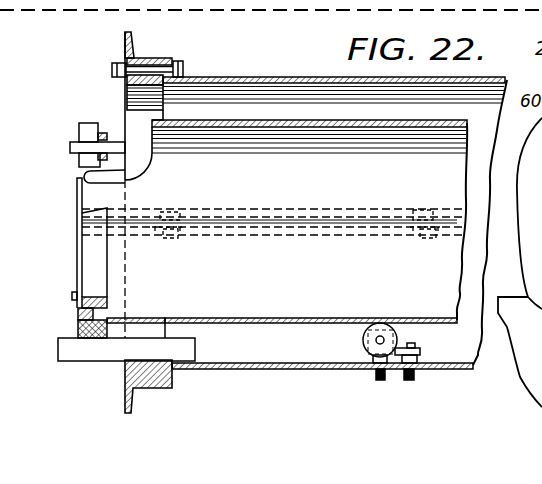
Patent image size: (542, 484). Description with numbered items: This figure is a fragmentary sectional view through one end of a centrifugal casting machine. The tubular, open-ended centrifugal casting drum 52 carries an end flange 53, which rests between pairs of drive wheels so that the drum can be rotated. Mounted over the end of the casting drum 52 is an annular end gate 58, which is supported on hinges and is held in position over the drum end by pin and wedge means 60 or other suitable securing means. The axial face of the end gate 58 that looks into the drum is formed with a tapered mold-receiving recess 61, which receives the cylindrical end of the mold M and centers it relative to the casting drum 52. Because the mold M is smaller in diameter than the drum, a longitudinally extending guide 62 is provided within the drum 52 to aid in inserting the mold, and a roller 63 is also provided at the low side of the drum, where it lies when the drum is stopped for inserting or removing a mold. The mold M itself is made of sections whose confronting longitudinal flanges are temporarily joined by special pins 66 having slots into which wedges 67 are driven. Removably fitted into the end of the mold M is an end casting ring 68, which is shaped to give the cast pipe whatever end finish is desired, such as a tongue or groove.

The centrifugal casting drum 52 is at (278, 77).
The end flange 53 is at (150, 58).
The annular end gate 58 is at (72, 325).
The pin and wedge means 60 is at (88, 128).
The tapered mold-receiving recess 61 is at (112, 318).
The longitudinally extending guide 62 is at (83, 345).
The roller 63 is at (363, 340).
The special pin 66 is at (181, 210).
The wedge 67 is at (180, 238).
The end casting ring 68 is at (82, 303).
The mold M is at (277, 318).